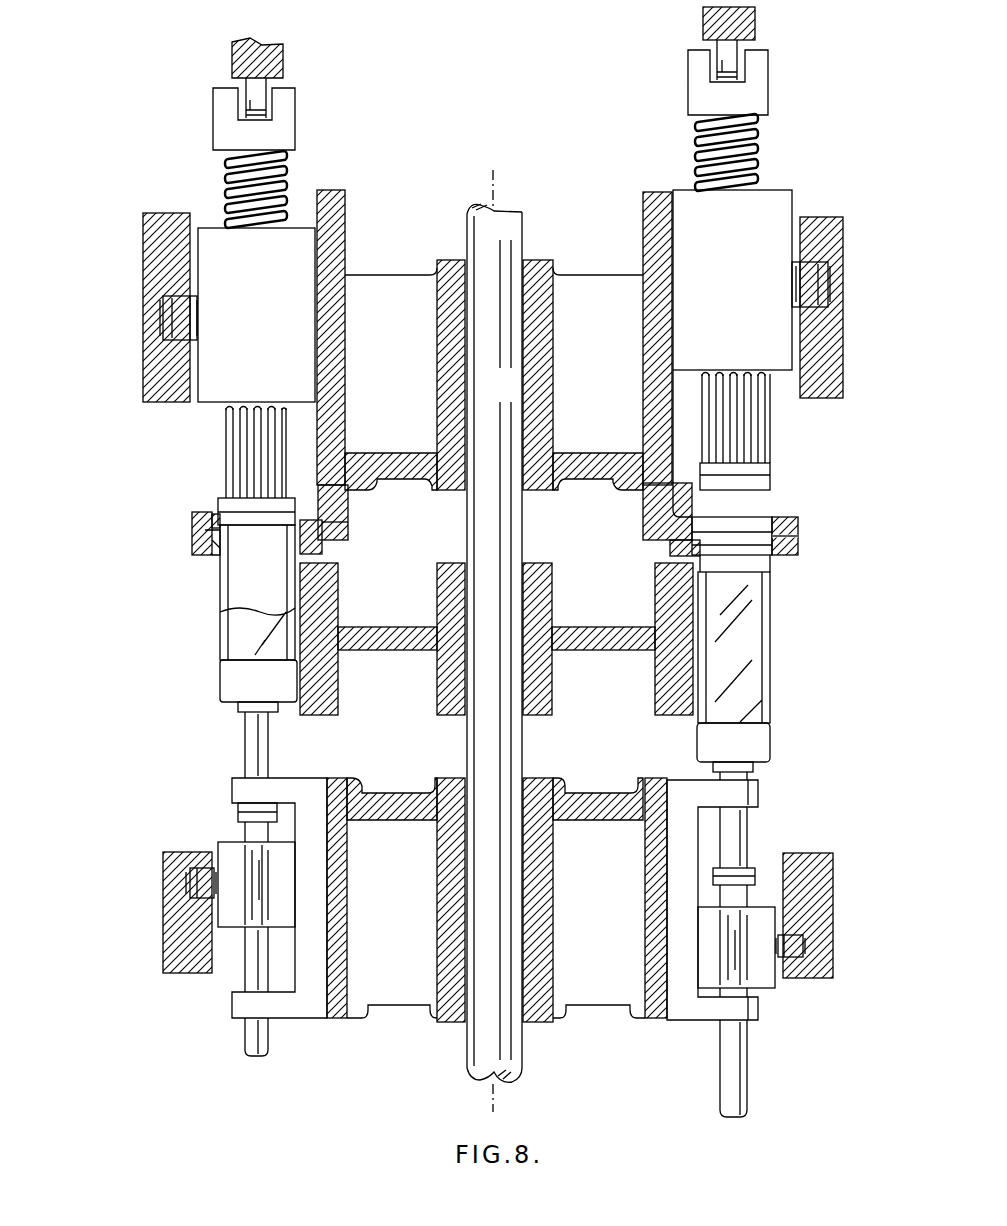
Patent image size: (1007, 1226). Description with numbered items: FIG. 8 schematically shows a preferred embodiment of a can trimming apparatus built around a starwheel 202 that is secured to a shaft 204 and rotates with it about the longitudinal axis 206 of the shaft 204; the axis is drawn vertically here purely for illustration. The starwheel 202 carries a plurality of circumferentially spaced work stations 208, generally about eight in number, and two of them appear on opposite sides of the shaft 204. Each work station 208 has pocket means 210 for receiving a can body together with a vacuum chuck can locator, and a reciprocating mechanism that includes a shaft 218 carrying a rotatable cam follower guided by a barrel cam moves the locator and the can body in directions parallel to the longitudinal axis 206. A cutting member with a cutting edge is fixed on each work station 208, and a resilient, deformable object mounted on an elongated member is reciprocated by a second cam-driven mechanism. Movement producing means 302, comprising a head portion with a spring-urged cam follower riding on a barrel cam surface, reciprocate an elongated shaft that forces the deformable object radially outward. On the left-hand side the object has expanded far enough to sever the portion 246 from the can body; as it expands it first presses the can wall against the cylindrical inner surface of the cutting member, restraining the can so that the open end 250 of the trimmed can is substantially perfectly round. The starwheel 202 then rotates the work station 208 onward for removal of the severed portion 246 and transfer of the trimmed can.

The starwheel 202 is at (792, 510).
The shaft 204 is at (515, 396).
The longitudinal axis 206 is at (503, 186).
The work station 208 is at (365, 256).
The pocket means 210 is at (344, 658).
The shaft 218 is at (748, 822).
The portion 246 is at (212, 521).
The open end 250 is at (335, 523).
The movement producing means 302 is at (301, 133).